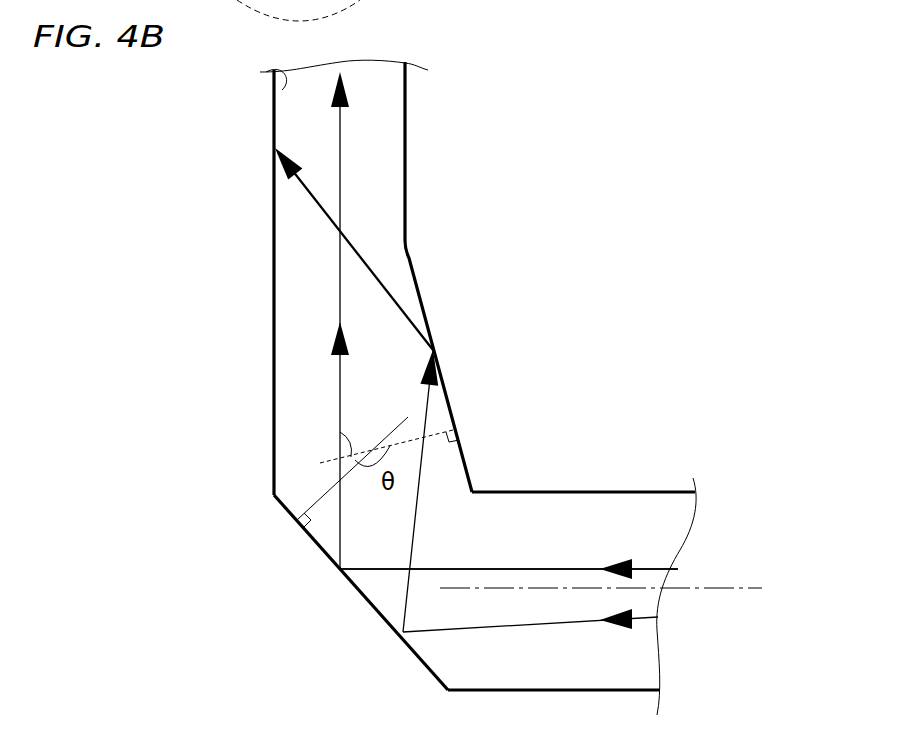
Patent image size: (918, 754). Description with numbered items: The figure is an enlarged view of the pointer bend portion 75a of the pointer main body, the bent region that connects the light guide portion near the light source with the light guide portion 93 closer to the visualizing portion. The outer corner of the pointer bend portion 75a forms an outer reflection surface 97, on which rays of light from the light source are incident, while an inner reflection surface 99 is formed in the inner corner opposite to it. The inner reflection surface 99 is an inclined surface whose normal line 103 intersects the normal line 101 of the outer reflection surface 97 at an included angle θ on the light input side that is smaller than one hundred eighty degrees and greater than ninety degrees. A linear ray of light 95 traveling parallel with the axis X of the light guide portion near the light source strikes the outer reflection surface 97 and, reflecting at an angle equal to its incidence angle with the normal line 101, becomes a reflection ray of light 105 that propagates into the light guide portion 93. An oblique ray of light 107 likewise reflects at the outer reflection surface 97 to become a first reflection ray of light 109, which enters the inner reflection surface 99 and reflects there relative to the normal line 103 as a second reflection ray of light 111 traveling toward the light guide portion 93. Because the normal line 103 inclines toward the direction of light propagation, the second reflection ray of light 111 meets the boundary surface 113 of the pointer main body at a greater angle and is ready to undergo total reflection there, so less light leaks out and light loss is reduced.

The pointer bend portion 75a is at (438, 389).
The light guide portion closer to the visualizing portion 93 is at (274, 124).
The linear ray of light 95 is at (660, 571).
The outer reflection surface 97 is at (436, 680).
The inner reflection surface 99 is at (388, 258).
The normal line of the outer reflection surface 101 is at (318, 492).
The normal line of the inner reflection surface 103 is at (337, 432).
The reflection ray of light 105 is at (340, 130).
The oblique ray of light 107 is at (634, 619).
The first reflection ray of light 109 is at (413, 528).
The second reflection ray of light 111 is at (305, 193).
The boundary surface 113 is at (274, 70).
The axis of the light guide portion X is at (725, 588).